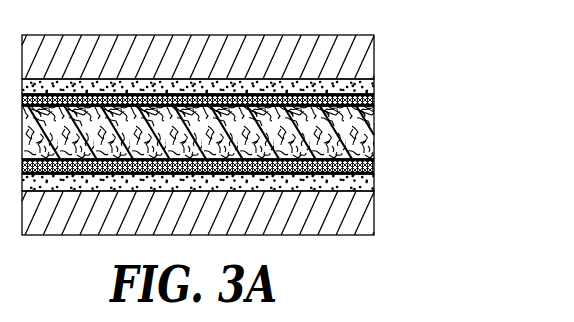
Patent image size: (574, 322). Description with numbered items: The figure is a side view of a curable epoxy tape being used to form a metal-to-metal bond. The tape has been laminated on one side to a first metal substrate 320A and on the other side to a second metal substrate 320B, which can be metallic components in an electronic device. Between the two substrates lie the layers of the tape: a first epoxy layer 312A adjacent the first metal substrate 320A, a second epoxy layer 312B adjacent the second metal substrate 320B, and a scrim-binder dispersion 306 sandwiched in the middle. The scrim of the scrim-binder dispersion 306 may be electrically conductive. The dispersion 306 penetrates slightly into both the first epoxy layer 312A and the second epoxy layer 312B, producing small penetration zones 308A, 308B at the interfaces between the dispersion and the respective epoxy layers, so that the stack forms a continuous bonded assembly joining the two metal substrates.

The first metal substrate 320A is at (374, 51).
The first epoxy layer 312A is at (374, 89).
The zone 308A is at (374, 103).
The scrim-binder dispersion 306 is at (374, 133).
The zone 308B is at (374, 163).
The second epoxy layer 312B is at (374, 183).
The second metal substrate 320B is at (374, 216).